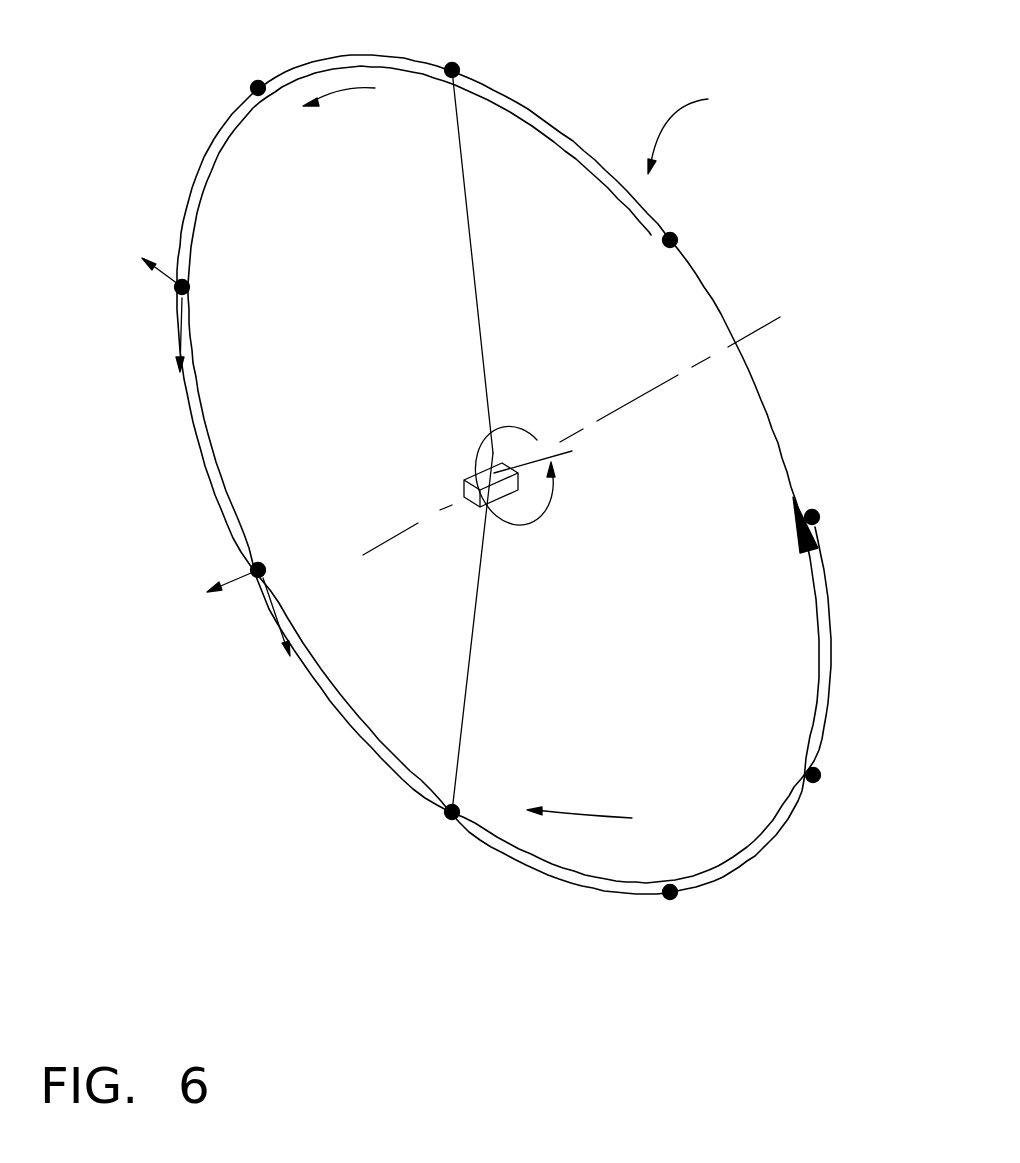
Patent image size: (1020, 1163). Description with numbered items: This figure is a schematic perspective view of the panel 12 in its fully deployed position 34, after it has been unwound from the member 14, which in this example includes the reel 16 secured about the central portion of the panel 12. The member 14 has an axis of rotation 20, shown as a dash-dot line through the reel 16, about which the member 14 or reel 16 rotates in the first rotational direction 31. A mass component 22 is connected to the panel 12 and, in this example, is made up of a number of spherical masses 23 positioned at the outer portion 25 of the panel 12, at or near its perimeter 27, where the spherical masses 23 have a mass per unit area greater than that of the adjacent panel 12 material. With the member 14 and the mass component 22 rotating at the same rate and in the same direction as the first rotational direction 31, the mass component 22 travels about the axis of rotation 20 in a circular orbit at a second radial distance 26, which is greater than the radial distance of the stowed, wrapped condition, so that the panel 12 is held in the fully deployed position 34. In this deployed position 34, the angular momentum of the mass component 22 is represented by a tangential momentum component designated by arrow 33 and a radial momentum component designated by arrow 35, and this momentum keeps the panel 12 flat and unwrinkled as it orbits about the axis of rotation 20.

The panel 12 is at (712, 797).
The member 14 is at (515, 482).
The reel 16 is at (549, 455).
The axis of rotation 20 is at (763, 327).
The mass component 22 is at (452, 62).
The spherical masses 23 is at (468, 66).
The outer portion 25 is at (486, 454).
The second radial distance 26 is at (472, 240).
The perimeter 27 is at (198, 165).
The first rotational direction 31 is at (287, 80).
The tangential momentum component arrow 33 is at (184, 316).
The fully deployed position 34 is at (695, 127).
The radial momentum component arrow 35 is at (166, 250).